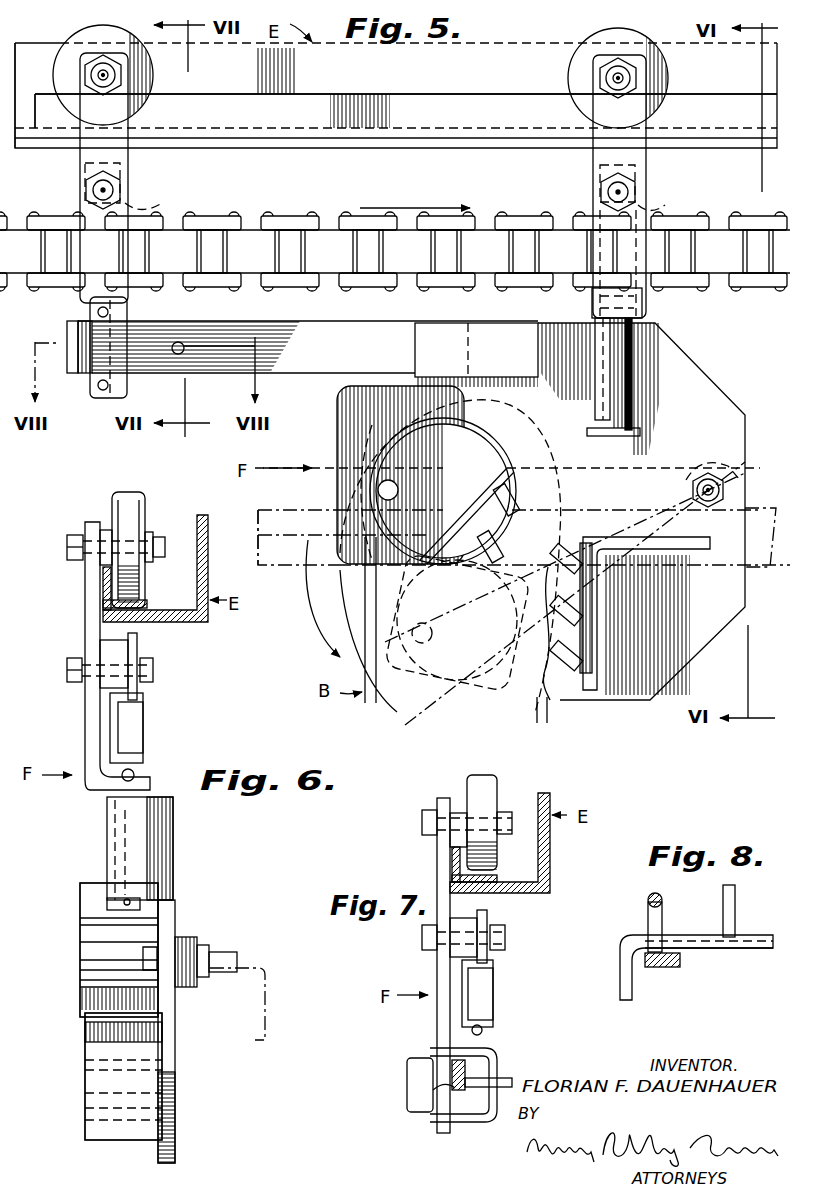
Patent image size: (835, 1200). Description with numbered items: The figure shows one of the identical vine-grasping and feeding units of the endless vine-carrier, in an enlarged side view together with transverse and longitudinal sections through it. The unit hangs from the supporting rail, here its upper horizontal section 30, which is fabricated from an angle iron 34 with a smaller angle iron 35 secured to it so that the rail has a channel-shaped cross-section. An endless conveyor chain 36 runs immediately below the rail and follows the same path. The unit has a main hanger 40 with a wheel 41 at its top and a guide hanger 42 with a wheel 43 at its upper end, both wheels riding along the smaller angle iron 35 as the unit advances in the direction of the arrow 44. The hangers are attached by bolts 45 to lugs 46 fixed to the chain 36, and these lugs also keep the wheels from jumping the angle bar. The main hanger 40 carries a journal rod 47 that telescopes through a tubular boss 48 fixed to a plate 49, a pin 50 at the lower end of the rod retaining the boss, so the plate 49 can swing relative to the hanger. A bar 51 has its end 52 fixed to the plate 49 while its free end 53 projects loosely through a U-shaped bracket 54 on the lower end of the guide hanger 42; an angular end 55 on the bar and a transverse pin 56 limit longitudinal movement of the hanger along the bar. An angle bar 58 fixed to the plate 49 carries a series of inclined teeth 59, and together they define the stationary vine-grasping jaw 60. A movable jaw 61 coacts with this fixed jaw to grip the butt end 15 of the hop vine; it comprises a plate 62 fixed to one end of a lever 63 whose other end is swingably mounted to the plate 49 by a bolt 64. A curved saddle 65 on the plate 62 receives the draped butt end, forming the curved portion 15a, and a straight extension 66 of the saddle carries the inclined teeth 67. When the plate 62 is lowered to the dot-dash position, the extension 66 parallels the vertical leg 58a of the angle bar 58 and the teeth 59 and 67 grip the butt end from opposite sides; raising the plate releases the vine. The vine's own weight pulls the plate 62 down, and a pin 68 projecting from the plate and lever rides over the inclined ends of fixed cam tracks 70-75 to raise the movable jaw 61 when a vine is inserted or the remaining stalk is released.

In FIG. 5, the butt end 15 is at (547, 707).
In FIG. 5, the curved portion 15a is at (503, 428).
In FIG. 5, the upper horizontal section 30 is at (488, 46).
In FIG. 5, the angle iron 34 is at (37, 46).
In FIG. 6, the angle iron 34 is at (200, 545).
In FIG. 7, the angle iron 34 is at (550, 854).
In FIG. 5, the smaller angle iron 35 is at (50, 128).
In FIG. 6, the smaller angle iron 35 is at (103, 594).
In FIG. 7, the smaller angle iron 35 is at (452, 866).
In FIG. 5, the endless conveyor chain 36 is at (228, 218).
In FIG. 6, the endless conveyor chain 36 is at (143, 733).
In FIG. 7, the endless conveyor chain 36 is at (493, 1000).
In FIG. 5, the main hanger 40 is at (592, 160).
In FIG. 6, the main hanger 40 is at (86, 738).
In FIG. 5, the wheel 41 is at (598, 40).
In FIG. 6, the wheel 41 is at (128, 492).
In FIG. 5, the guide hanger 42 is at (121, 174).
In FIG. 7, the guide hanger 42 is at (437, 1026).
In FIG. 8, the guide hanger 42 is at (666, 967).
In FIG. 5, the wheel 43 is at (62, 86).
In FIG. 7, the wheel 43 is at (467, 777).
In FIG. 5, the arrow 44 is at (415, 192).
In FIG. 5, the bolts 45 is at (88, 193).
In FIG. 6, the bolts 45 is at (66, 671).
In FIG. 7, the bolts 45 is at (422, 940).
In FIG. 5, the lugs 46 is at (128, 205).
In FIG. 6, the lugs 46 is at (137, 645).
In FIG. 7, the lugs 46 is at (487, 910).
In FIG. 5, the journal rod 47 is at (627, 360).
In FIG. 6, the journal rod 47 is at (114, 861).
In FIG. 5, the tubular boss 48 is at (596, 337).
In FIG. 6, the tubular boss 48 is at (107, 807).
In FIG. 5, the plate 49 is at (720, 402).
In FIG. 6, the plate 49 is at (165, 838).
In FIG. 5, the pin 50 is at (588, 432).
In FIG. 6, the pin 50 is at (112, 903).
In FIG. 5, the bar 51 is at (343, 342).
In FIG. 7, the bar 51 is at (450, 1092).
In FIG. 8, the bar 51 is at (755, 950).
In FIG. 5, the end 52 is at (510, 334).
In FIG. 5, the free end 53 is at (138, 328).
In FIG. 8, the free end 53 is at (686, 940).
In FIG. 5, the U-shaped bracket 54 is at (112, 377).
In FIG. 7, the U-shaped bracket 54 is at (497, 1058).
In FIG. 8, the U-shaped bracket 54 is at (650, 906).
In FIG. 5, the angular end 55 is at (72, 333).
In FIG. 7, the angular end 55 is at (408, 1082).
In FIG. 8, the angular end 55 is at (620, 982).
In FIG. 5, the transverse pin 56 is at (182, 344).
In FIG. 7, the transverse pin 56 is at (473, 1122).
In FIG. 8, the transverse pin 56 is at (735, 918).
In FIG. 5, the angle bar 58 is at (618, 540).
In FIG. 6, the angle bar 58 is at (88, 1126).
In FIG. 5, the vertical leg 58a is at (592, 645).
In FIG. 5, the inclined teeth 59 is at (583, 590).
In FIG. 6, the inclined teeth 59 is at (90, 1069).
In FIG. 5, the stationary vine-grasping jaw 60 is at (607, 652).
In FIG. 6, the stationary vine-grasping jaw 60 is at (82, 1040).
In FIG. 5, the movable jaw 61 is at (522, 527).
In FIG. 6, the movable jaw 61 is at (80, 943).
In FIG. 5, the plate 62 is at (343, 422).
In FIG. 5, the lever 63 is at (360, 483).
In FIG. 6, the lever 63 is at (186, 937).
In FIG. 5, the bolt 64 is at (724, 490).
In FIG. 6, the bolt 64 is at (160, 988).
In FIG. 5, the curved saddle 65 is at (377, 463).
In FIG. 6, the curved saddle 65 is at (80, 892).
In FIG. 5, the straight extension 66 is at (498, 487).
In FIG. 5, the inclined teeth 67 is at (470, 545).
In FIG. 6, the inclined teeth 67 is at (92, 977).
In FIG. 5, the pin 68 is at (380, 496).
In FIG. 6, the pin 68 is at (216, 962).
In FIG. 5, the cam tracks 70-75 is at (285, 550).
In FIG. 6, the cam tracks 70-75 is at (262, 1005).